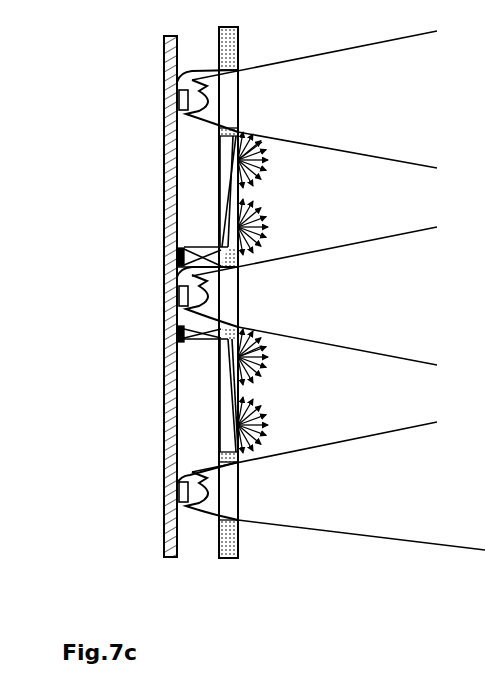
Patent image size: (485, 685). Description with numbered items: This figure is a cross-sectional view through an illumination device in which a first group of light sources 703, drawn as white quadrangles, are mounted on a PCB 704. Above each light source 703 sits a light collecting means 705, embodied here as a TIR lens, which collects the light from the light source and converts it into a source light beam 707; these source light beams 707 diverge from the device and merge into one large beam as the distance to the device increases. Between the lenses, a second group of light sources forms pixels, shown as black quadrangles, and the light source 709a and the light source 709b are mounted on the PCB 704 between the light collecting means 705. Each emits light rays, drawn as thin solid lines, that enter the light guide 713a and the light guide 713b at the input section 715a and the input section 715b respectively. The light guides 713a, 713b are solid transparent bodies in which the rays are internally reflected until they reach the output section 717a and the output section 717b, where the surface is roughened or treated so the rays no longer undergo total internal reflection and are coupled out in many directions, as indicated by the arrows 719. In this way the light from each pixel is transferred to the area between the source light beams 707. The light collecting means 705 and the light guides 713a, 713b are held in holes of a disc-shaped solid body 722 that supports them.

The light source 703 is at (179, 100).
The PCB 704 is at (166, 555).
The light collecting means 705 is at (186, 71).
The source light beam 707 is at (338, 290).
The light source 709a is at (181, 250).
The light source 709b is at (179, 340).
The light guide 713a is at (221, 180).
The light guide 713b is at (230, 419).
The input section 715a is at (193, 244).
The input section 715b is at (196, 345).
The output section 717a is at (283, 142).
The output section 717b is at (283, 342).
The arrows 719 is at (262, 142).
The solid body 722 is at (221, 560).